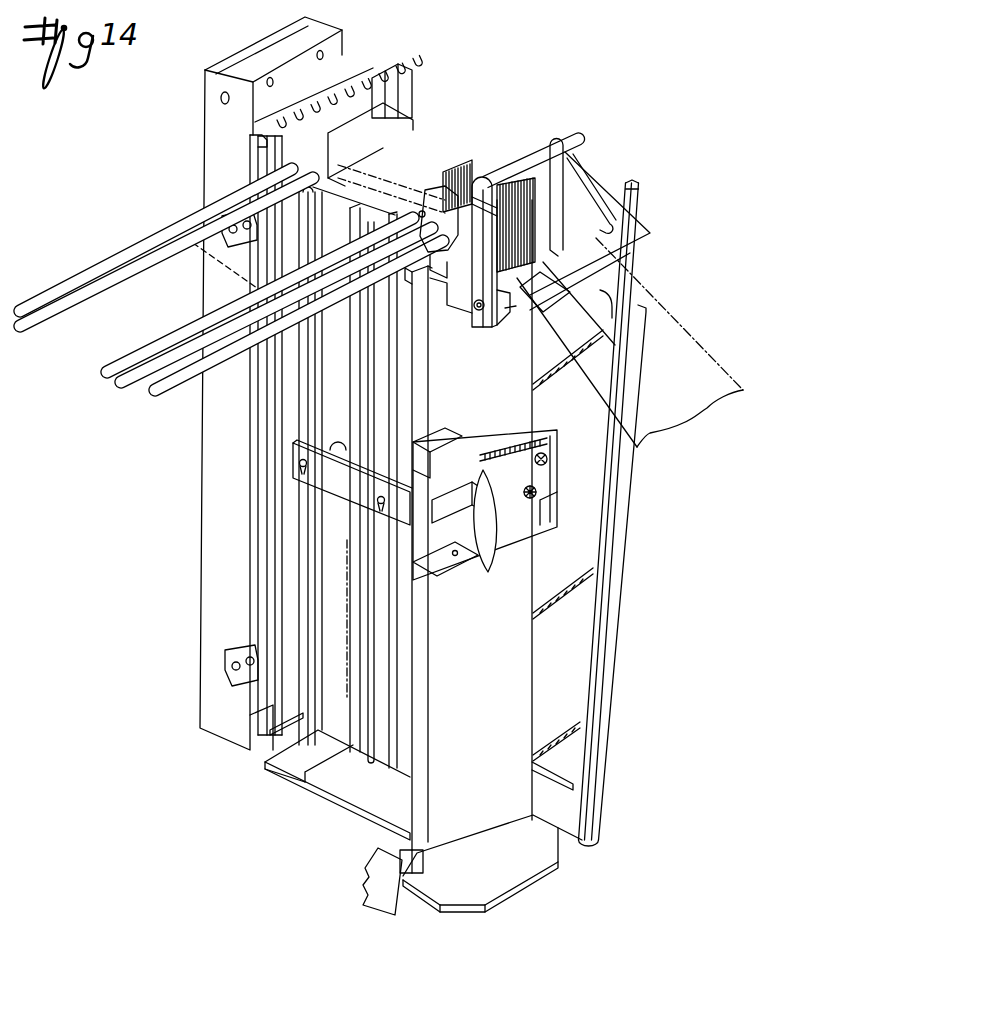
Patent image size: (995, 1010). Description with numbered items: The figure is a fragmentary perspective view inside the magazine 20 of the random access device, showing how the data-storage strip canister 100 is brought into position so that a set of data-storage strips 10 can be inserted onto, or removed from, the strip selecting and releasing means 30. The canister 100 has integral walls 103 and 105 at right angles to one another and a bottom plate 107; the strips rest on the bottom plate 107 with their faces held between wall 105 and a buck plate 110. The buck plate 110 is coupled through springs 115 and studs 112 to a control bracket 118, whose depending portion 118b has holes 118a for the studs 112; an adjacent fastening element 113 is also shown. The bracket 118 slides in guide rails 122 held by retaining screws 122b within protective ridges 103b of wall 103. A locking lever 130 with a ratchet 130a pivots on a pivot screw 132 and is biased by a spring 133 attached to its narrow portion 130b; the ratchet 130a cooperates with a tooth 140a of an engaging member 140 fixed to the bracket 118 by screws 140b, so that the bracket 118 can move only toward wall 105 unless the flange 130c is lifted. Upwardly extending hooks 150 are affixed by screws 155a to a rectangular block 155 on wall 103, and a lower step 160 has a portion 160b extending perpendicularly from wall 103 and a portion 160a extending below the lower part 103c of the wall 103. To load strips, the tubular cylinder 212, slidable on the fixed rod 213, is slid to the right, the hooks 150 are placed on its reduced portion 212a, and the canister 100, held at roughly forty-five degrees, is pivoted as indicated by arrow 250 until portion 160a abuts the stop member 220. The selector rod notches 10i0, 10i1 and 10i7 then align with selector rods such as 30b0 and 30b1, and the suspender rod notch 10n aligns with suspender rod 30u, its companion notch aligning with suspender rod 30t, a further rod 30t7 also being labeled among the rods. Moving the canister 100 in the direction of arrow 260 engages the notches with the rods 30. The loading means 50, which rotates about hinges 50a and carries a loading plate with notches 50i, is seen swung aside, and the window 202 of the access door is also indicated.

The data-storage strips 10 is at (489, 194).
The selector rod notch 10i0 is at (468, 168).
The selector rod notch 10i1 is at (424, 200).
The selector rod notch 10i7 is at (345, 148).
The suspender rod notch 10n is at (515, 202).
The magazine 20 is at (150, 465).
The strip selecting and releasing means 30 is at (231, 299).
The suspender rod 30t is at (36, 301).
The tube 30t7 is at (55, 314).
The selector rod 30b1 is at (165, 344).
The selector rod 30b0 is at (136, 390).
The suspender rod 30u is at (164, 398).
The loading means 50 is at (218, 150).
The hinges 50a is at (216, 252).
The notches of the loading plate 50i is at (300, 100).
The data-storage strip canister 100 is at (706, 352).
The wall 103 is at (534, 650).
The protective ridges 103b is at (480, 440).
The frame foot 103c is at (417, 850).
The wall 105 is at (590, 190).
The bottom plate 107 is at (290, 766).
The buck plate 110 is at (337, 723).
The studs 112 is at (306, 468).
The screw 113 is at (296, 466).
The springs 115 is at (346, 446).
The control bracket 118 is at (488, 563).
The holes 118a is at (464, 543).
The depending portion 118b is at (293, 483).
The guide rails 122 is at (445, 548).
The retaining screws 122b is at (452, 567).
The locking lever 130 is at (492, 486).
The ratchet 130a is at (503, 453).
The narrow portion 130b is at (555, 440).
The flange 130c is at (445, 437).
The pivot screw 132 is at (548, 461).
The spring 133 is at (506, 438).
The engaging member 140 is at (545, 458).
The tooth 140a is at (590, 544).
The screws 140b is at (521, 503).
The hooks 150 is at (520, 155).
The rectangular block 155 is at (513, 322).
The screws 155a is at (478, 311).
The lower step 160 is at (546, 866).
The portion of step 160a is at (443, 866).
The portion of step 160b is at (486, 888).
The window 202 is at (647, 400).
The tubular cylinder 212 is at (512, 170).
The reduced portion 212a is at (428, 222).
The fixed rod 213 is at (584, 137).
The stop member 220 is at (410, 905).
The arrow 250 is at (710, 413).
The arrow 260 is at (428, 631).